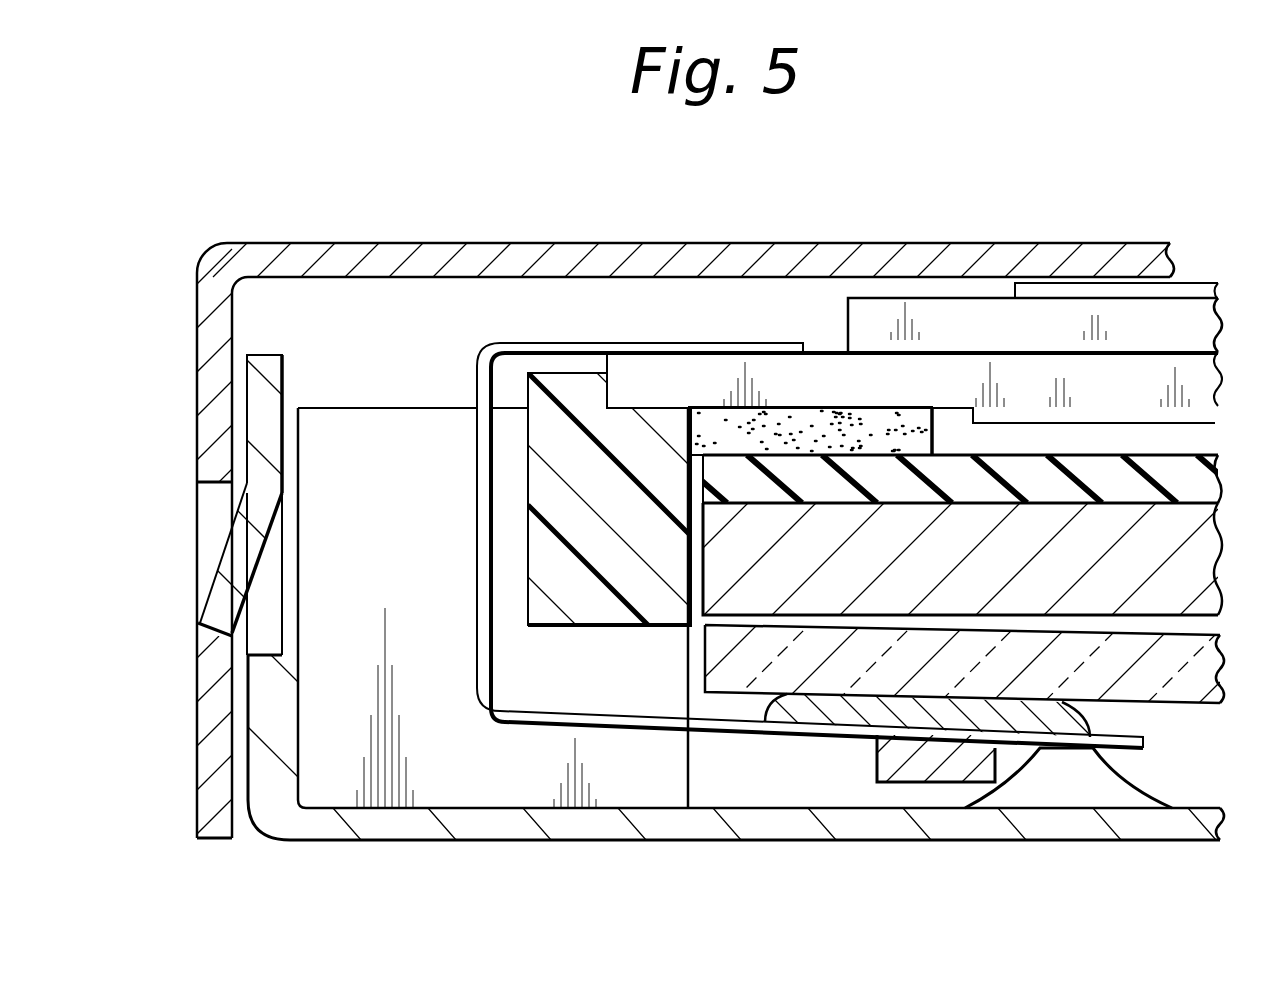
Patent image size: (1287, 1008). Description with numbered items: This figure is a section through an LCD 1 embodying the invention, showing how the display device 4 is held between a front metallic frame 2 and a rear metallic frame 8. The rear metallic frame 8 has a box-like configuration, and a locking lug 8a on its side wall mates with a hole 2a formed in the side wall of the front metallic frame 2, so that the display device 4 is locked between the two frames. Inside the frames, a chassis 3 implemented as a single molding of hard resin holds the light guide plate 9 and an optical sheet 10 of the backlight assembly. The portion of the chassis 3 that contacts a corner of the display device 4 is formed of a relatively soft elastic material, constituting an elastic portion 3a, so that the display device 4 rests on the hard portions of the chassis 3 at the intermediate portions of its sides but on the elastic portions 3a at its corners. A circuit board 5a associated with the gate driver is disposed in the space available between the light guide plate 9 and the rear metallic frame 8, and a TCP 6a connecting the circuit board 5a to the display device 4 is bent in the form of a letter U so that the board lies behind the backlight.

The LCD 1 is at (702, 520).
The front metallic frame 2 is at (918, 246).
The holes 2a is at (210, 532).
The chassis 3 is at (585, 605).
The elastic portions 3a is at (790, 428).
The display device 4 is at (1178, 332).
The circuit board 5a is at (1203, 693).
The TCPs 6a is at (490, 345).
The rear metallic frame 8 is at (980, 822).
The locking lugs 8a is at (230, 572).
The light guide plate 9 is at (1178, 575).
The optical sheet 10 is at (1178, 485).